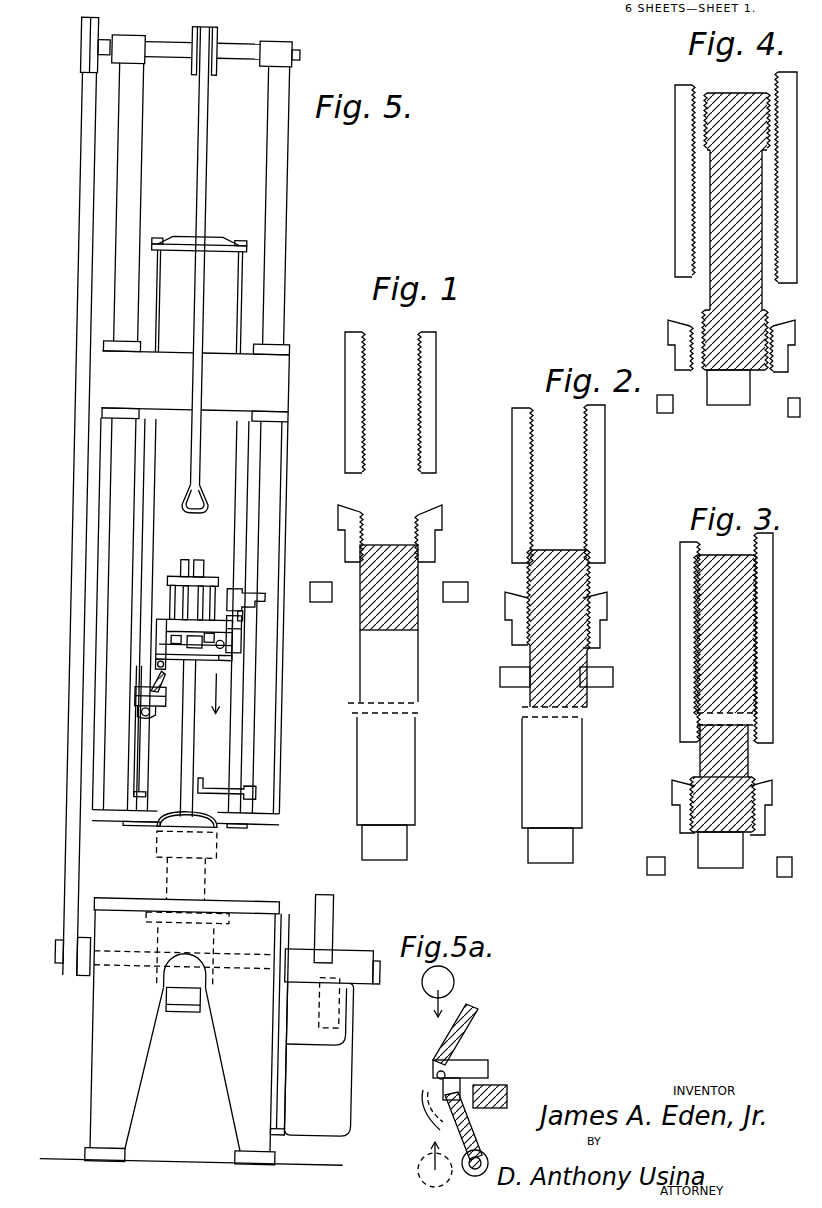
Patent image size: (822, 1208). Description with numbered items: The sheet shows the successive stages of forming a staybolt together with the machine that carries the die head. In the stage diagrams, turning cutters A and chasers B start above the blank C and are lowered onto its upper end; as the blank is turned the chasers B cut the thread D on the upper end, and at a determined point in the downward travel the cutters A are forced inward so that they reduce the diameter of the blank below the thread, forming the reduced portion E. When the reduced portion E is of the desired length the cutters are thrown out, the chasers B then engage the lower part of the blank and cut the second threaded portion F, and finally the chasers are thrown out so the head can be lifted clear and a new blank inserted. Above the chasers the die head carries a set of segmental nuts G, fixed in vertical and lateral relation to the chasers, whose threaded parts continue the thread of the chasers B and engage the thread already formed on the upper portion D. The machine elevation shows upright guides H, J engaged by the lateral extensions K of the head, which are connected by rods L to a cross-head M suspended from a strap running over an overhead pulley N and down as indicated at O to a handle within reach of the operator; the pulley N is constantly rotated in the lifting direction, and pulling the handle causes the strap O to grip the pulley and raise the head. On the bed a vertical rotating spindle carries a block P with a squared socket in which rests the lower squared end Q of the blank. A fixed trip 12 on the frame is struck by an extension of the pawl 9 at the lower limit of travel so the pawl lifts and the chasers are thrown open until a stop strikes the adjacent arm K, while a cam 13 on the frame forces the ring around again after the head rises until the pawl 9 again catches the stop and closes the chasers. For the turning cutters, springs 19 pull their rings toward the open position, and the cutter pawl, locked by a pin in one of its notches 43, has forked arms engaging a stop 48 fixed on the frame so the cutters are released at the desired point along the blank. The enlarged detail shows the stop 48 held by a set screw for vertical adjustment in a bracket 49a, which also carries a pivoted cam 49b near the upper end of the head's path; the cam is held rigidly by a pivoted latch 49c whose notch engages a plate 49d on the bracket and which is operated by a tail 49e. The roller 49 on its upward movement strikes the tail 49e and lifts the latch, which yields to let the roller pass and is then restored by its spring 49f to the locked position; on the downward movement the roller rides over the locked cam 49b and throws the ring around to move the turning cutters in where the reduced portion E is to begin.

In FIG. 5, the pulley N is at (206, 40).
In FIG. 5, the strap O is at (196, 174).
In FIG. 5, the cross-head M is at (210, 243).
In FIG. 5, the rods L is at (231, 455).
In FIG. 5, the upright guide H is at (97, 728).
In FIG. 5, the upright guide J is at (273, 748).
In FIG. 5, the segmental nuts G is at (182, 564).
In FIG. 1, the segmental nuts G is at (364, 432).
In FIG. 2, the segmental nuts G is at (558, 484).
In FIG. 3, the segmental nuts G is at (726, 638).
In FIG. 4, the segmental nuts G is at (736, 177).
In FIG. 5, the cam 13 is at (236, 592).
In FIG. 5, the pawl 9 is at (233, 617).
In FIG. 5, the lateral extensions K is at (242, 628).
In FIG. 5, the springs 19 is at (226, 646).
In FIG. 5, the fixed trip 12 is at (229, 660).
In FIG. 5, the notch 43 is at (157, 650).
In FIG. 5, the roller 49 is at (157, 663).
In FIG. 5A, the roller 49 is at (454, 982).
In FIG. 5, the bracket 49a is at (140, 686).
In FIG. 5, the pivoted cam 49b is at (140, 689).
In FIG. 5A, the pivoted cam 49b is at (450, 1064).
In FIG. 5A, the pivoted latch 49c is at (470, 1058).
In FIG. 5A, the plate 49d is at (495, 1080).
In FIG. 5A, the tail 49e is at (435, 1112).
In FIG. 5A, the spring 49f is at (442, 1098).
In FIG. 5, the stop 48 is at (145, 793).
In FIG. 5, the blank C is at (191, 763).
In FIG. 1, the blank C is at (383, 727).
In FIG. 2, the blank C is at (552, 790).
In FIG. 5, the block P is at (206, 826).
In FIG. 1, the chasers B is at (340, 522).
In FIG. 2, the chasers B is at (510, 628).
In FIG. 3, the chasers B is at (685, 807).
In FIG. 4, the chasers B is at (673, 337).
In FIG. 1, the thread D is at (409, 548).
In FIG. 2, the thread D is at (586, 578).
In FIG. 3, the thread D is at (702, 600).
In FIG. 4, the thread D is at (708, 128).
In FIG. 1, the turning cutters A is at (320, 602).
In FIG. 2, the turning cutters A is at (503, 677).
In FIG. 3, the turning cutters A is at (656, 875).
In FIG. 4, the turning cutters A is at (665, 413).
In FIG. 2, the reduced portion E is at (583, 657).
In FIG. 3, the reduced portion E is at (702, 755).
In FIG. 4, the reduced portion E is at (708, 285).
In FIG. 3, the second threaded portion F is at (697, 795).
In FIG. 4, the second threaded portion F is at (706, 322).
In FIG. 1, the squared end Q is at (400, 847).
In FIG. 3, the squared end Q is at (720, 850).
In FIG. 4, the squared end Q is at (728, 387).